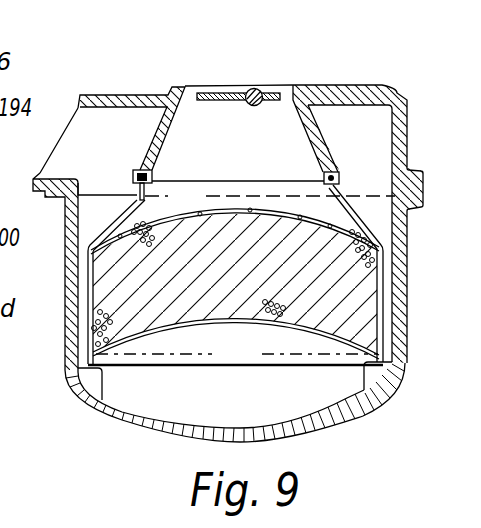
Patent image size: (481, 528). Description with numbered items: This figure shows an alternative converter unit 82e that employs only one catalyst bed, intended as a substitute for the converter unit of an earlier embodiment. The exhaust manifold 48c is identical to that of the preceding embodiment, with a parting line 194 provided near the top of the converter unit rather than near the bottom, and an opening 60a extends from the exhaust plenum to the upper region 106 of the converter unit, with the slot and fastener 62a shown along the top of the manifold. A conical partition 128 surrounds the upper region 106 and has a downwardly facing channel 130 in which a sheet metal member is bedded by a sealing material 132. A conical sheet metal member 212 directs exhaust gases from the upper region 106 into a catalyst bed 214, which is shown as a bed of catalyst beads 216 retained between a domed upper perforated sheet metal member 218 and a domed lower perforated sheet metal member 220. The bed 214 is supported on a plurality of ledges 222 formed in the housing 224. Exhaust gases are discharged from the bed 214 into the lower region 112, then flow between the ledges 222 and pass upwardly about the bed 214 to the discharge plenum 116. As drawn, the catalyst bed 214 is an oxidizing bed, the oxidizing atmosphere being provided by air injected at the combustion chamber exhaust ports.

The exhaust manifold 48c is at (400, 89).
The opening 60a is at (186, 87).
The fastener slot and bolt 62a is at (240, 84).
The converter unit 82e is at (67, 283).
The upper region 106 is at (275, 128).
The lower region 112 is at (331, 430).
The discharge plenum 116 is at (93, 115).
The conical partition 128 is at (177, 130).
The downwardly facing channel 130 is at (136, 186).
The sealing material 132 is at (144, 170).
The parting line 194 is at (425, 196).
The conical sheet metal member 212 is at (360, 250).
The catalyst bed 214 is at (86, 323).
The catalyst beads 216 is at (357, 305).
The domed upper perforated sheet metal member 218 is at (270, 198).
The domed lower perforated sheet metal member 220 is at (212, 320).
The ledges 222 is at (402, 378).
The housing 224 is at (68, 371).